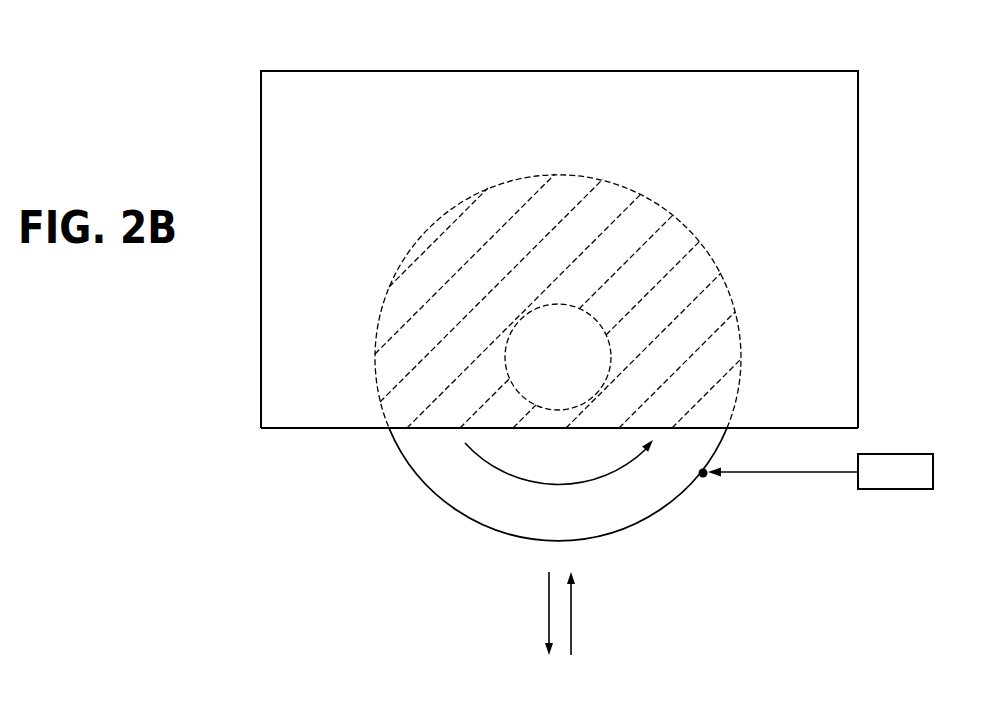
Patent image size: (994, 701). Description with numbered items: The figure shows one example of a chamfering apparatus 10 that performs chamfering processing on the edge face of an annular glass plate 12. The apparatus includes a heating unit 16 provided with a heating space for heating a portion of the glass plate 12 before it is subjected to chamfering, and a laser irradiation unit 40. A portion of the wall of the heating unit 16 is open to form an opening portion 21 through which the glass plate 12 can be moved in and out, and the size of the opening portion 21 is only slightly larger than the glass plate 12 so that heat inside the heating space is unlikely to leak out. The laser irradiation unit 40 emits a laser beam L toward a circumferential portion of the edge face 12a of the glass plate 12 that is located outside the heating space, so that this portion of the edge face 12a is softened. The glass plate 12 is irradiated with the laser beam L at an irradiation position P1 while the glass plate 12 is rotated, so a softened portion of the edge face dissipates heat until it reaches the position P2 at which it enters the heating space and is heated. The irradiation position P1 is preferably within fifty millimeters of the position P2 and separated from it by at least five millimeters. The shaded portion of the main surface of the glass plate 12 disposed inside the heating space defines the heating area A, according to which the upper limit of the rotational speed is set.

The chamfering apparatus 10 is at (884, 207).
The annular glass plate 12 is at (492, 518).
The edge face 12a is at (657, 518).
The heating unit 16 is at (675, 71).
The opening portion 21 is at (727, 428).
The laser irradiation unit 40 is at (896, 454).
The laser beam L is at (843, 472).
The irradiation position P1 is at (704, 476).
The entry position P2 is at (730, 428).
The heating area A is at (428, 404).